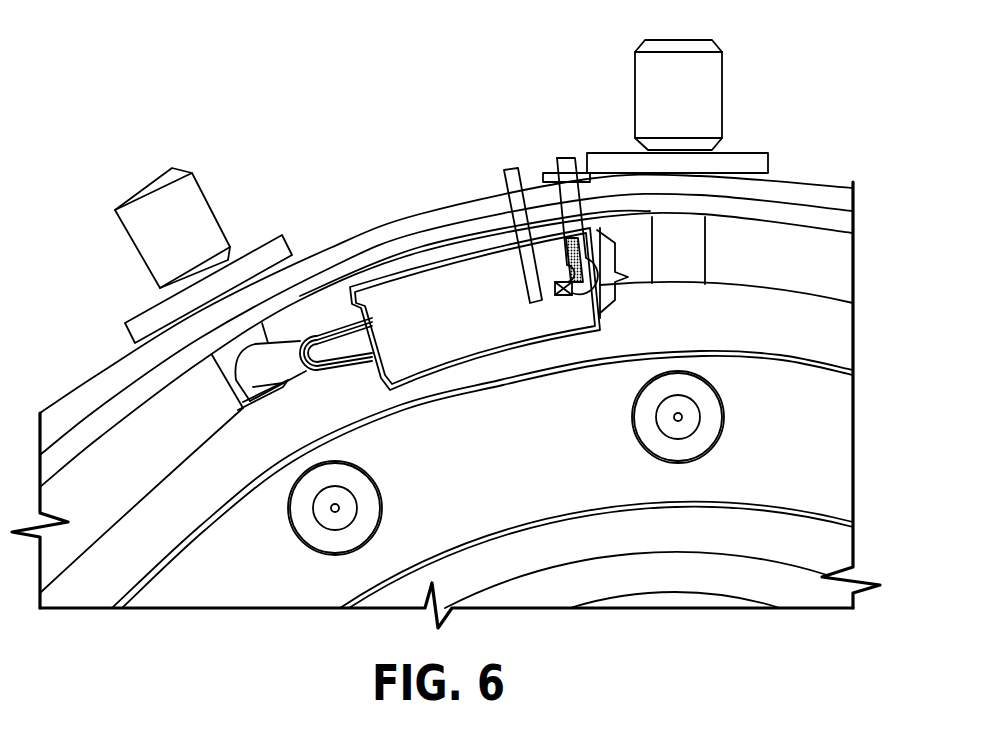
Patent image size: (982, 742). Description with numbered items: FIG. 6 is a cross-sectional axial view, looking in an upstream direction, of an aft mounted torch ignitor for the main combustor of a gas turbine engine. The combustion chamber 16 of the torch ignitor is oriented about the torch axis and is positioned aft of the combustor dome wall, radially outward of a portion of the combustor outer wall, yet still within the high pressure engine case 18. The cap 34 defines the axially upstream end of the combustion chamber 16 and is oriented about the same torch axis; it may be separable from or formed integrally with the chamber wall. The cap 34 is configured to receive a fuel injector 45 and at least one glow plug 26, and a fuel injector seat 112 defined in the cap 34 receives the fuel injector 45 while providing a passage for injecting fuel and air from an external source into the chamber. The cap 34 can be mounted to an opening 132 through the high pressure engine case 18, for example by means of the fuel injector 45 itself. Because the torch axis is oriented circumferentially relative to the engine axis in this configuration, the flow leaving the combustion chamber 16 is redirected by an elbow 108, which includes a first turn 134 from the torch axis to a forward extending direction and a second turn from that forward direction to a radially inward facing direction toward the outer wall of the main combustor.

The high pressure engine case 18 is at (800, 212).
The combustion chamber 16 is at (395, 326).
The opening 132 is at (330, 350).
The first turn 134 is at (212, 355).
The elbow 108 is at (325, 328).
The glow plug 26 is at (527, 250).
The fuel injector 45 is at (565, 158).
The fuel injector seat 112 is at (577, 277).
The cap 34 is at (628, 276).